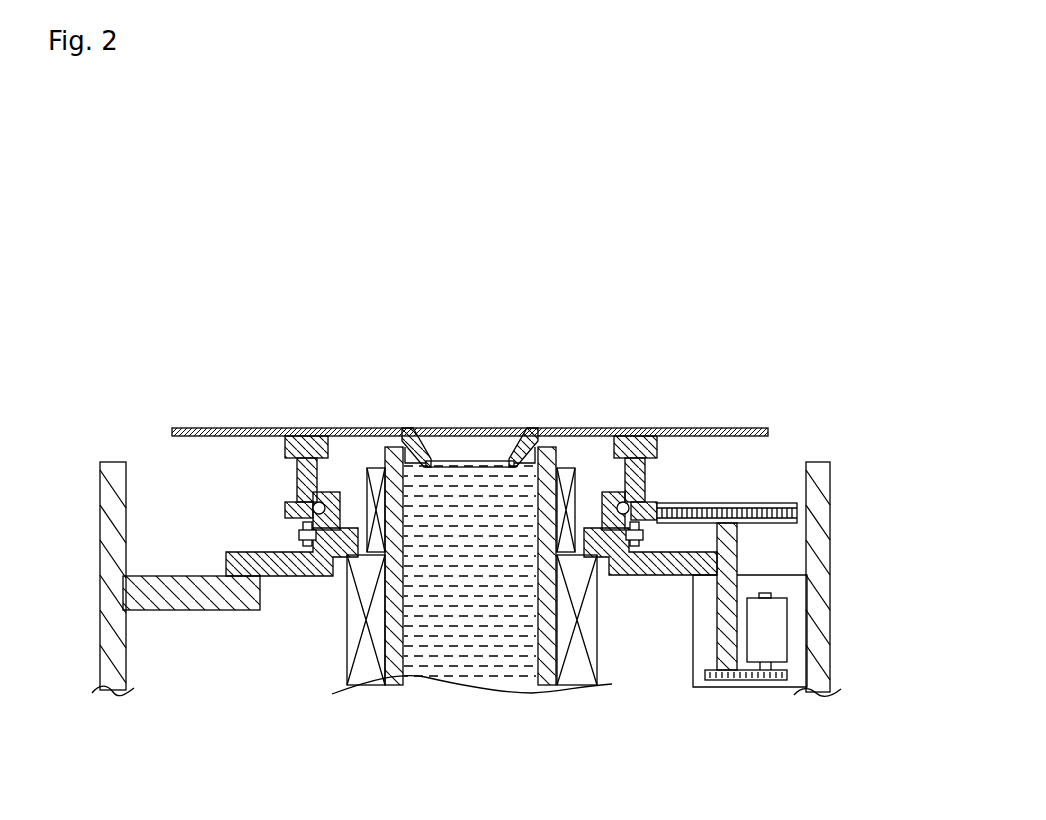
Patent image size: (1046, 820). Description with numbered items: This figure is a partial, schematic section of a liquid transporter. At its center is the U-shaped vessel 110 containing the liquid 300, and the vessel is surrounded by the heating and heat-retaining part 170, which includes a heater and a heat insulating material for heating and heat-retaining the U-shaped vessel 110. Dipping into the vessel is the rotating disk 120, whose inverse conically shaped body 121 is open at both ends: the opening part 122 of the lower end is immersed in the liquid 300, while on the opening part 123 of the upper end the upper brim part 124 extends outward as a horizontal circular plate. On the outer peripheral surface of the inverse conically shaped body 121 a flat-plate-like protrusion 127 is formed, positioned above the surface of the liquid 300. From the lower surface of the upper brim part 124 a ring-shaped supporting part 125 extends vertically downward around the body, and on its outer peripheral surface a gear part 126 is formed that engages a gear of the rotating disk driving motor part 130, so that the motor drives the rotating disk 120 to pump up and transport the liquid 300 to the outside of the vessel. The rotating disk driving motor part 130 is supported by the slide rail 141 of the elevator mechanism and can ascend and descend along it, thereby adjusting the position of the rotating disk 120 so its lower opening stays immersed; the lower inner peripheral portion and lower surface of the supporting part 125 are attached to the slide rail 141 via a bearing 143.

The U-shaped vessel 110 is at (560, 641).
The rotating disk 120 is at (470, 413).
The inverse conically shaped body 121 is at (428, 443).
The opening part of the lower end 122 is at (503, 462).
The opening part of the upper end 123 is at (502, 432).
The upper brim part 124 is at (237, 428).
The supporting part 125 is at (631, 436).
The gear part 126 is at (653, 502).
The protrusion 127 is at (381, 460).
The rotating disk driving motor part 130 is at (765, 688).
The slide rail 141 is at (113, 466).
The bearing 143 is at (310, 503).
The heating and heat-retaining part 170 is at (348, 558).
The liquid 300 is at (467, 480).